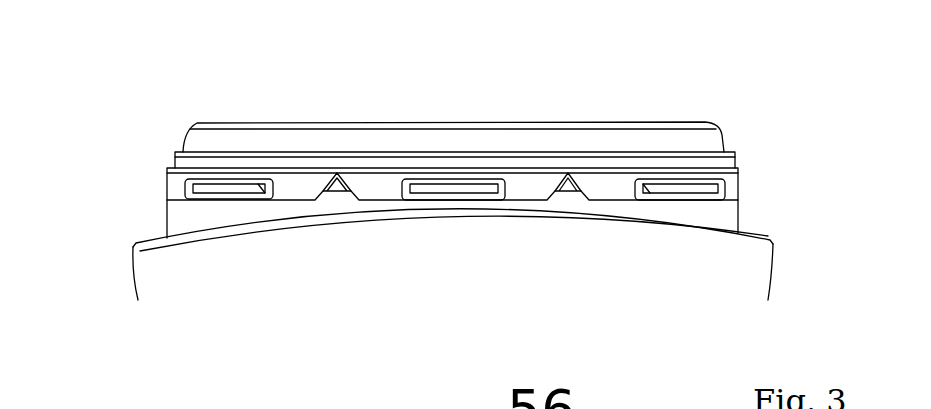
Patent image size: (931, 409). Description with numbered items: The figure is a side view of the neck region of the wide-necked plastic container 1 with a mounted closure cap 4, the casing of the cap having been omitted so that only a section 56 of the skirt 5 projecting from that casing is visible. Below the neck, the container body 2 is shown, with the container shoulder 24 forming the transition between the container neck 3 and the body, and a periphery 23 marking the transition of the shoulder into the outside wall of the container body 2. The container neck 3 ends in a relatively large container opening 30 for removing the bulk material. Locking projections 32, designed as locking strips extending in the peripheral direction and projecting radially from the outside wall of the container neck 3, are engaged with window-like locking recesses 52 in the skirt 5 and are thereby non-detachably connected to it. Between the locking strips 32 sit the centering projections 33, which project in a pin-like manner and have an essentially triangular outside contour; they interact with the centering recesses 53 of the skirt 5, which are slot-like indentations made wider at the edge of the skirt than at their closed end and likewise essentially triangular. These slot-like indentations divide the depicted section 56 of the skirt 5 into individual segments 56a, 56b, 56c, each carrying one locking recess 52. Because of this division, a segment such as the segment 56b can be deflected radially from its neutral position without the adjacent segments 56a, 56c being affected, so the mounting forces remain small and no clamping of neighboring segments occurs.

The wide-necked plastic container 1 is at (84, 254).
The container body 2 is at (143, 278).
The container neck 3 is at (723, 143).
The closure cap 4 is at (146, 178).
The skirt 5 is at (738, 182).
The periphery 23 is at (133, 247).
The container shoulder 24 is at (144, 219).
The container opening 30 is at (549, 104).
The locking projections 32 is at (242, 185).
The centering projections 33 is at (337, 188).
The locking recesses 52 is at (242, 183).
The centering recesses 53 is at (358, 177).
The section of the skirt 56 is at (533, 177).
The segment 56a is at (288, 190).
The segment 56b is at (518, 188).
The segment 56c is at (612, 190).